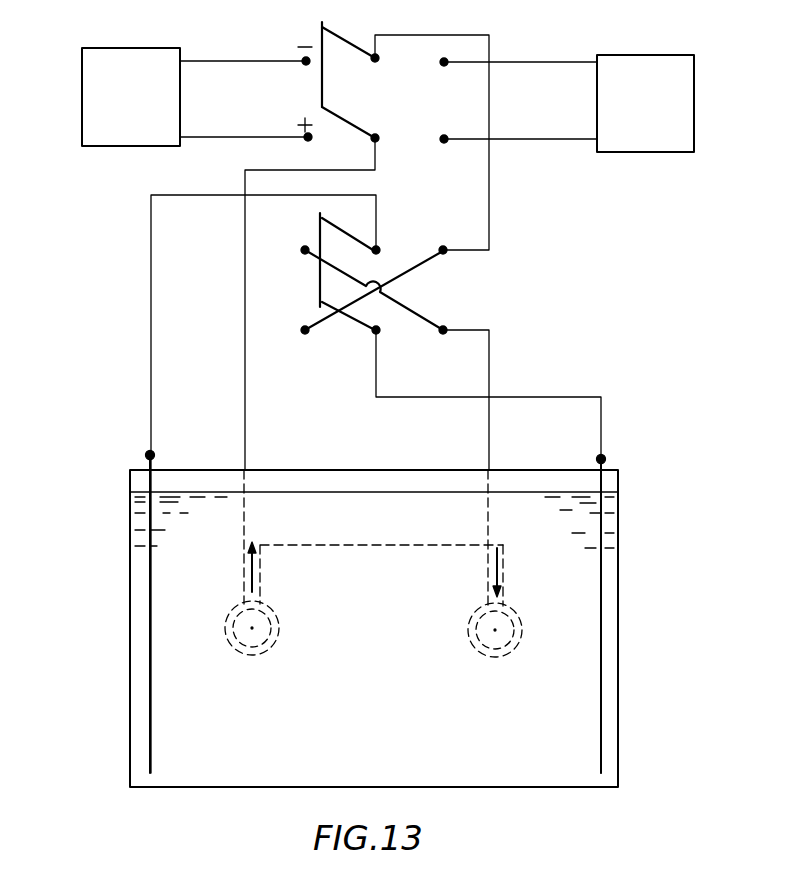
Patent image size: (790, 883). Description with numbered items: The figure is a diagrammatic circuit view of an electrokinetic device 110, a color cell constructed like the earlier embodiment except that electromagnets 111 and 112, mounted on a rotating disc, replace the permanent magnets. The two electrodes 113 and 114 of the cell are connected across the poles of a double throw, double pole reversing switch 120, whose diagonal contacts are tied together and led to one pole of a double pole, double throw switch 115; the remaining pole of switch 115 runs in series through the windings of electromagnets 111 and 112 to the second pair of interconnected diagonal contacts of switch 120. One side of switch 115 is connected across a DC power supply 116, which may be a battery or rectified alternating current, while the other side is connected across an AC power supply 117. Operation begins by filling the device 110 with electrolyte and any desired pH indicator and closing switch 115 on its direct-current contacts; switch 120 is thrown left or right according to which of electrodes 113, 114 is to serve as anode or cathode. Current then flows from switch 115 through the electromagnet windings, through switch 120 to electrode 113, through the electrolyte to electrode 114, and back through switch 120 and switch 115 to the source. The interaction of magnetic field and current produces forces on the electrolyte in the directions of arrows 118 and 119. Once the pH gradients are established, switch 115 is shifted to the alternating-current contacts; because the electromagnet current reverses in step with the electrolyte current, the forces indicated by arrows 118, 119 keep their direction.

The electrokinetic device 110 is at (130, 490).
The electromagnet 111 is at (252, 655).
The electromagnet 112 is at (492, 650).
The electrode 113 is at (149, 612).
The electrode 114 is at (600, 600).
The double pole, double throw switch 115 is at (384, 108).
The DC power supply 116 is at (82, 90).
The AC power supply 117 is at (694, 104).
The arrow 118 is at (258, 575).
The arrow 119 is at (493, 573).
The double throw, double pole reversing switch 120 is at (437, 301).